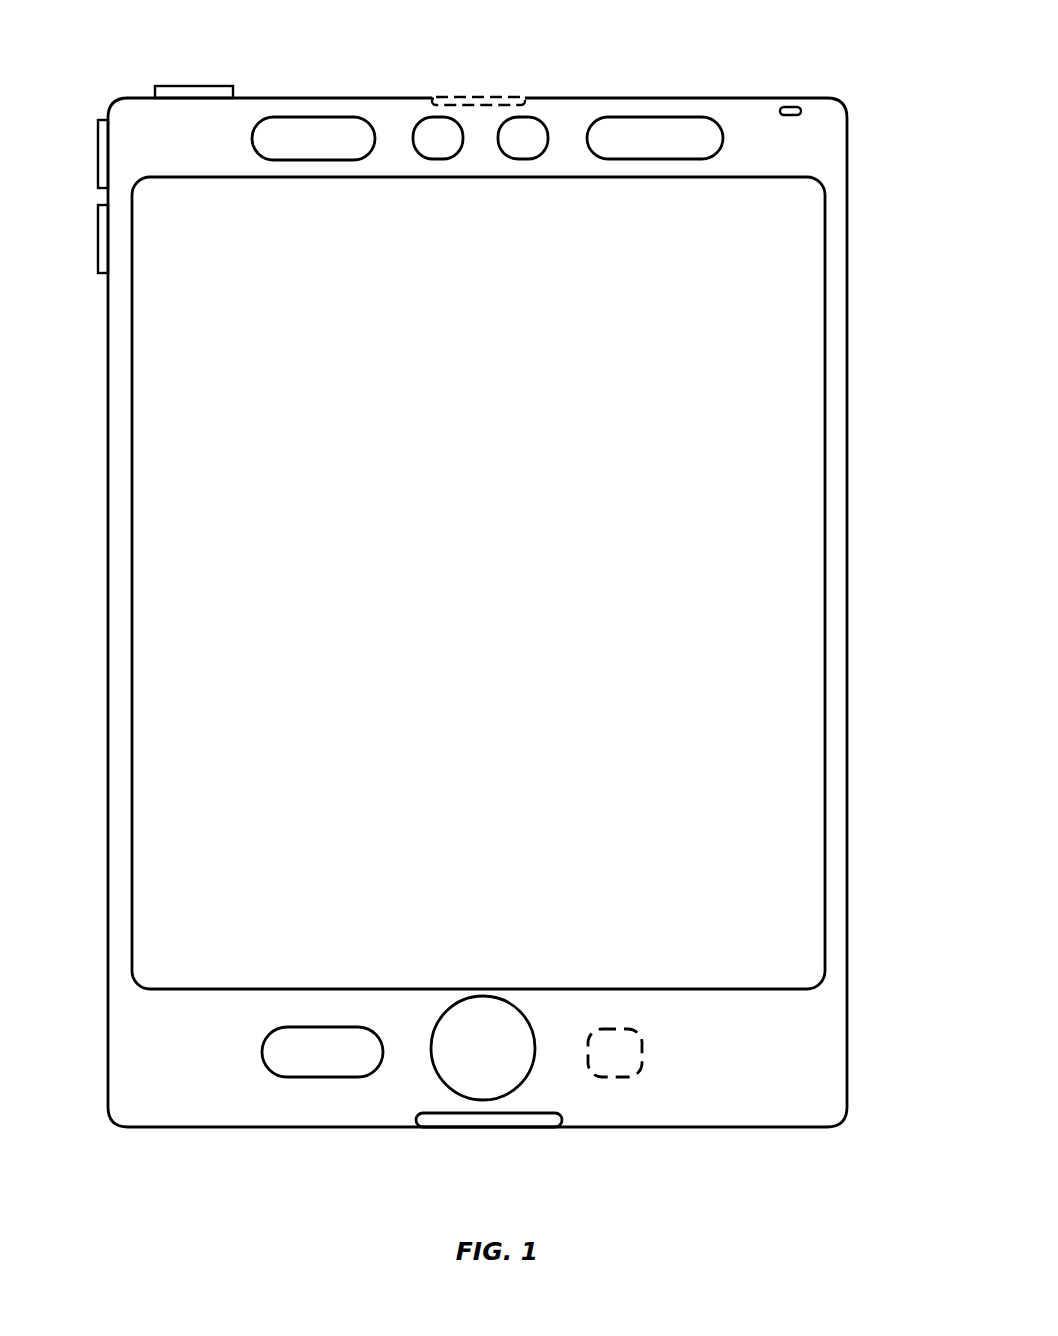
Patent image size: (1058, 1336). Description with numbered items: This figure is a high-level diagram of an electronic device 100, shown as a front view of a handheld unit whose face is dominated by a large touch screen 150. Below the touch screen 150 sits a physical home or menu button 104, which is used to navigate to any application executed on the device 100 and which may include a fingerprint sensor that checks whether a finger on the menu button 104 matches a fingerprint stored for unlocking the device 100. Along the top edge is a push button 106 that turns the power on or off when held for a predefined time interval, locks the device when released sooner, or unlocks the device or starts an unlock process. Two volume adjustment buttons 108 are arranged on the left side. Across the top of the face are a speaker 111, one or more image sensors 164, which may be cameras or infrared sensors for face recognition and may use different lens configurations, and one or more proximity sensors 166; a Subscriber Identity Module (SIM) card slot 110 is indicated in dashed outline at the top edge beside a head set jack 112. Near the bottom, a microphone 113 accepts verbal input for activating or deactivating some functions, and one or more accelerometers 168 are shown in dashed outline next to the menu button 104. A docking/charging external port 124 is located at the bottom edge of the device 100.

The electronic device 100 is at (884, 95).
The menu button 104 is at (483, 1048).
The push button 106 is at (190, 86).
The volume adjustment buttons 108 is at (99, 152).
The Subscriber Identity Module (SIM) card slot 110 is at (480, 96).
The speaker 111 is at (297, 150).
The head set jack 112 is at (790, 107).
The microphone 113 is at (306, 1062).
The docking/charging external port 124 is at (490, 1128).
The touch screen 150 is at (825, 478).
The image sensors 164 is at (422, 150).
The proximity sensors 166 is at (639, 150).
The accelerometers 168 is at (599, 1065).